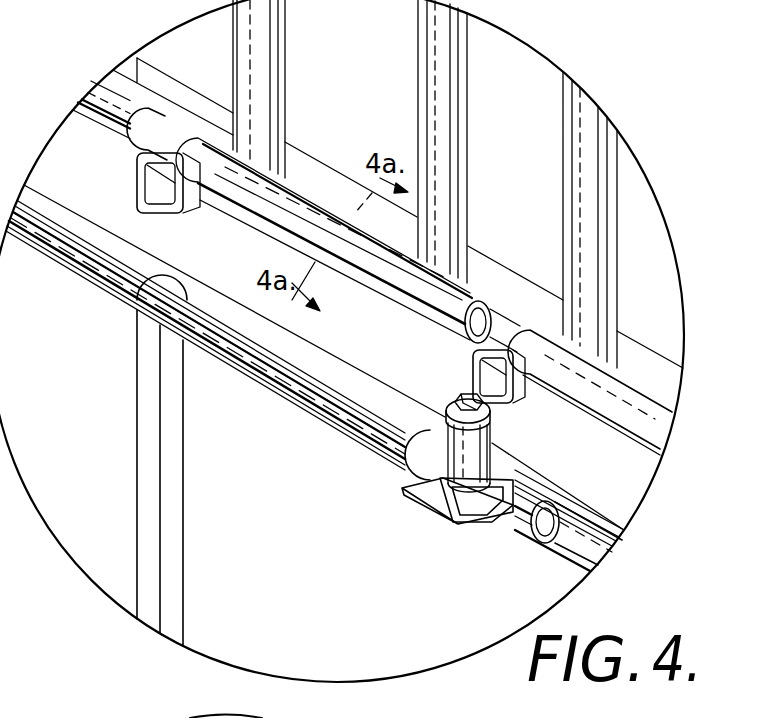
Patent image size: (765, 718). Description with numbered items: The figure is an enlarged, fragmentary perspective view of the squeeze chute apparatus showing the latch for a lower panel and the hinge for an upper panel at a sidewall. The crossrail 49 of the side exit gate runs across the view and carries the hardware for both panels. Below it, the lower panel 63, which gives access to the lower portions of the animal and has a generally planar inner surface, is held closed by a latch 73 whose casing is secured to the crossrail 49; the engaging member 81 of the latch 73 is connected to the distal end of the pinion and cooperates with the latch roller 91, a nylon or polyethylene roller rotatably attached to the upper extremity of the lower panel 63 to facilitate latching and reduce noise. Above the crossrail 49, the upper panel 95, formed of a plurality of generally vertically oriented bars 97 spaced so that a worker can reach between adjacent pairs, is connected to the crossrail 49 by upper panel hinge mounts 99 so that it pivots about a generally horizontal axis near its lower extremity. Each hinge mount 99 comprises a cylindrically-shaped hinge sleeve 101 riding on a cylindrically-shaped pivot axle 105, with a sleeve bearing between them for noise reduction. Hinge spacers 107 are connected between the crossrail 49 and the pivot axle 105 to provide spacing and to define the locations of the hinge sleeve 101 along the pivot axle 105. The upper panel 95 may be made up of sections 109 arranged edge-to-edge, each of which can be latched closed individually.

The crossrail 49 is at (185, 269).
The lower panel 63 is at (321, 540).
The latch 73 is at (430, 524).
The engaging member 81 is at (493, 528).
The latch roller 91 is at (408, 478).
The upper panel 95 is at (627, 126).
The vertically oriented bars 97 is at (415, 100).
The upper panel hinge mounts 99 is at (256, 223).
The hinge sleeve 101 is at (303, 194).
The pivot axle 105 is at (468, 337).
The hinge spacers 107 is at (527, 397).
The sections 109 is at (557, 228).